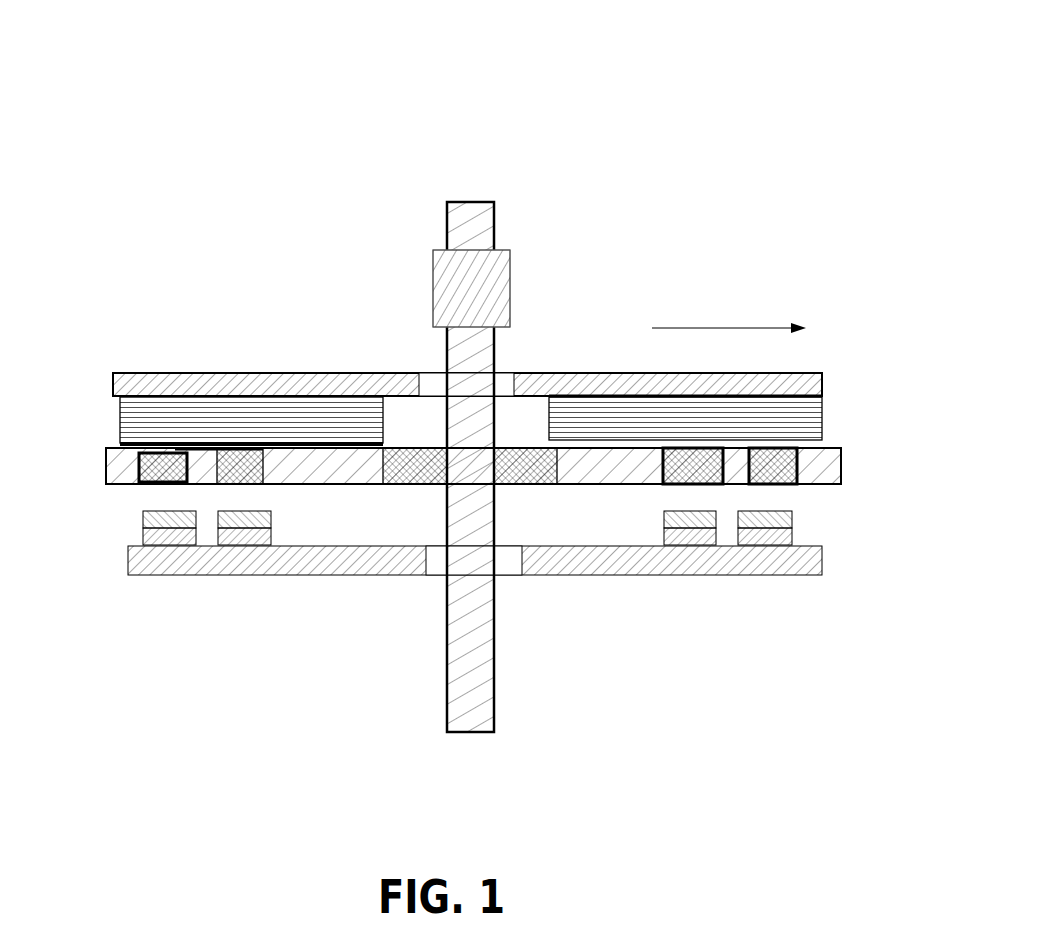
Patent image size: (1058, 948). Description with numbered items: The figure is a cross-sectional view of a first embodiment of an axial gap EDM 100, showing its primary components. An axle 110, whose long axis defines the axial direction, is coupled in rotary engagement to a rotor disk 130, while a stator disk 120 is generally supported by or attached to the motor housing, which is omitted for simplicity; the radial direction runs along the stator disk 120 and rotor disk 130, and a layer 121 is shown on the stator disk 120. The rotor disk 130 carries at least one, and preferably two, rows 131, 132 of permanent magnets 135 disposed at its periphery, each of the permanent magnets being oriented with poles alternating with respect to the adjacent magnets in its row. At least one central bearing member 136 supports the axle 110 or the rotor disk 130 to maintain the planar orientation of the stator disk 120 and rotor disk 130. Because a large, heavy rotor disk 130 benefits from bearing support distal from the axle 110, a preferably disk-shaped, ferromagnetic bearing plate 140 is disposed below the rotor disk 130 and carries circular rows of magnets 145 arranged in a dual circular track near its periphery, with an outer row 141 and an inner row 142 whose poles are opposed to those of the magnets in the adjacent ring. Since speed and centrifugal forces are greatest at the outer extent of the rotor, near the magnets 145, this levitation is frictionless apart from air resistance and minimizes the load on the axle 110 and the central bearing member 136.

The axial gap EDM 100 is at (352, 148).
The axle 110 is at (470, 200).
The stator disk 120 is at (225, 355).
The laminated layer 121 is at (822, 415).
The rotor disk 130 is at (852, 466).
The row of permanent magnets 131 is at (645, 472).
The row of permanent magnets 132 is at (137, 467).
The permanent magnets 135 is at (240, 446).
The central bearing member 136 is at (470, 328).
The bearing plate 140 is at (574, 640).
The outer row of magnets 141 is at (683, 585).
The inner row of magnets 142 is at (767, 585).
The magnets 145 is at (817, 522).